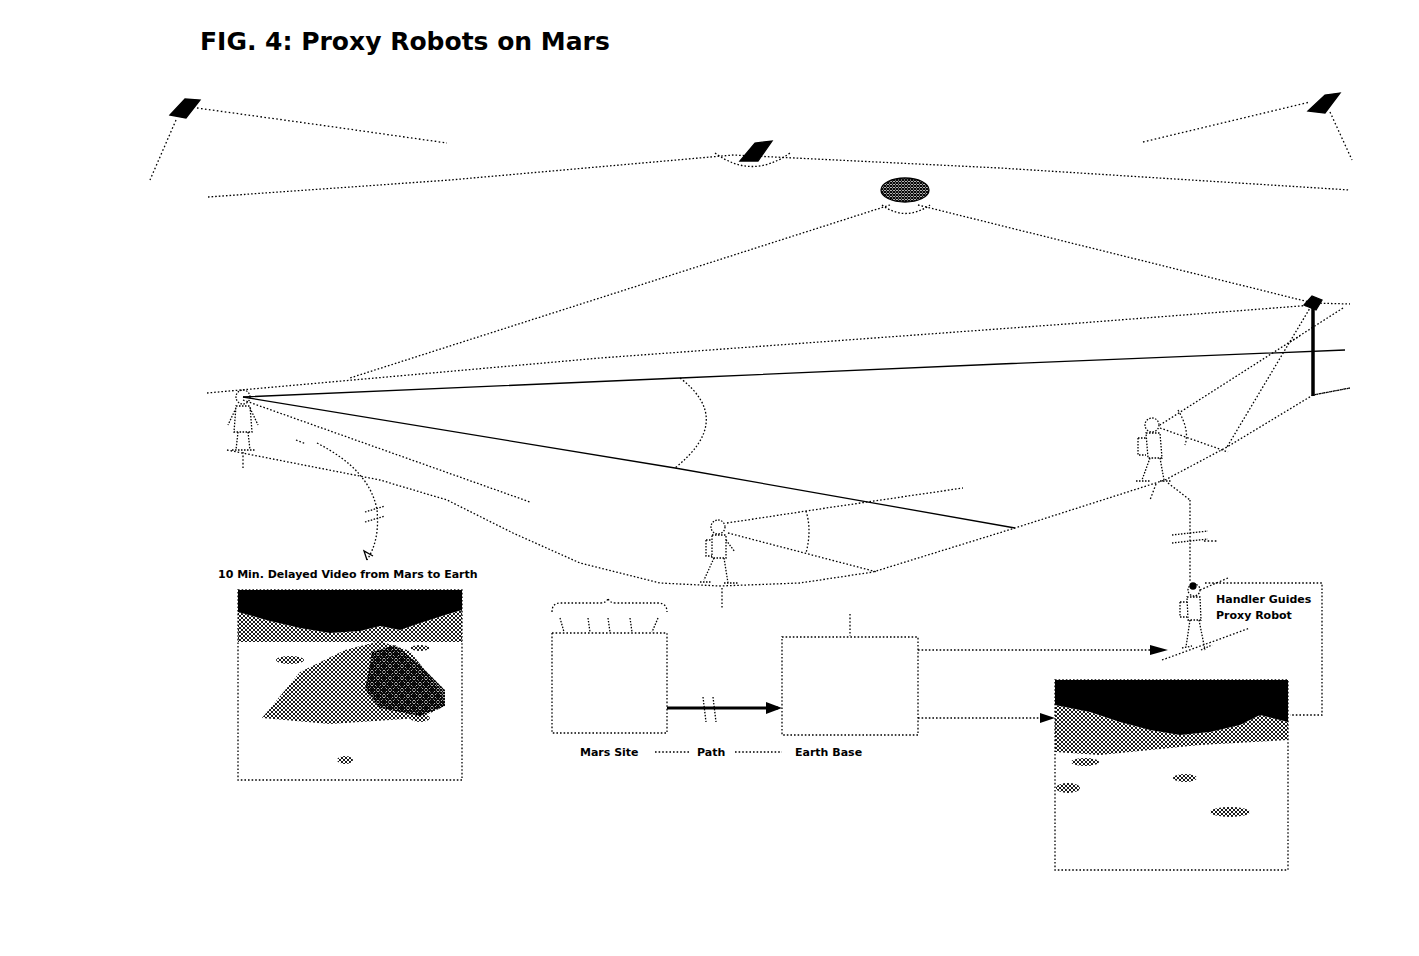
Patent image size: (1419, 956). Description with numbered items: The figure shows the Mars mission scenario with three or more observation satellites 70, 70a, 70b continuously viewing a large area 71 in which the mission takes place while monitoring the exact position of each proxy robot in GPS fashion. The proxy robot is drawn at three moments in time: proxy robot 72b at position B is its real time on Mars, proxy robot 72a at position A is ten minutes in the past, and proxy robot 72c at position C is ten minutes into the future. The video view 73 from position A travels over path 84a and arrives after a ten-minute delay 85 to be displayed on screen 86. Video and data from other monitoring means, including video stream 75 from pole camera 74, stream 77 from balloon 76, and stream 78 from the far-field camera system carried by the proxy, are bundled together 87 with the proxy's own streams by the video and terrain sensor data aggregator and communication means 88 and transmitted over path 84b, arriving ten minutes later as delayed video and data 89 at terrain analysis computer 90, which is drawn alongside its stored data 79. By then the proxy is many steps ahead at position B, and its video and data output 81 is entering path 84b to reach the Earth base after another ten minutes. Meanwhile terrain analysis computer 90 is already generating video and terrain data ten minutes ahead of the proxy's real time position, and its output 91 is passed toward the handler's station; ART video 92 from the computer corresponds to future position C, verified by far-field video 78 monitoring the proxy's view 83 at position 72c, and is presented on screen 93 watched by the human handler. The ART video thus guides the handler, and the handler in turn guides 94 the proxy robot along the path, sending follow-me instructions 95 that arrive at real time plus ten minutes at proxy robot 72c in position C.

The observation satellite 70 is at (748, 150).
The observation satellite 70a is at (190, 118).
The observation satellite 70b is at (1316, 120).
The large area 71 is at (752, 168).
The proxy robot at position A 72a is at (243, 389).
The proxy robot at position B 72b is at (712, 519).
The proxy robot at position C 72c is at (1147, 417).
The video view 73 is at (300, 418).
The pole camera 74 is at (1318, 298).
The video stream from pole camera 75 is at (1290, 342).
The balloon 76 is at (884, 188).
The stream from balloon 77 is at (906, 215).
The far-field video stream 78 is at (694, 423).
The stored data 79 is at (853, 622).
The video and data output 81 is at (845, 530).
The sensor field of view 83 is at (1194, 431).
The path 84a is at (379, 513).
The path 84b is at (704, 697).
The ten-minute arrival delay 85 is at (379, 548).
The screen 86 is at (355, 782).
The bundling of streams 87 is at (609, 607).
The video and terrain sensor data aggregator and communication means 88 is at (553, 720).
The arrived video and data 89 is at (722, 705).
The terrain analysis computer 90 is at (790, 637).
The data to environmental simulator 91 is at (983, 652).
The ART video 92 is at (945, 715).
The screen 93 is at (1054, 800).
The handler guidance 94 is at (1190, 563).
The follow me ping and GPS data 95 is at (1245, 505).